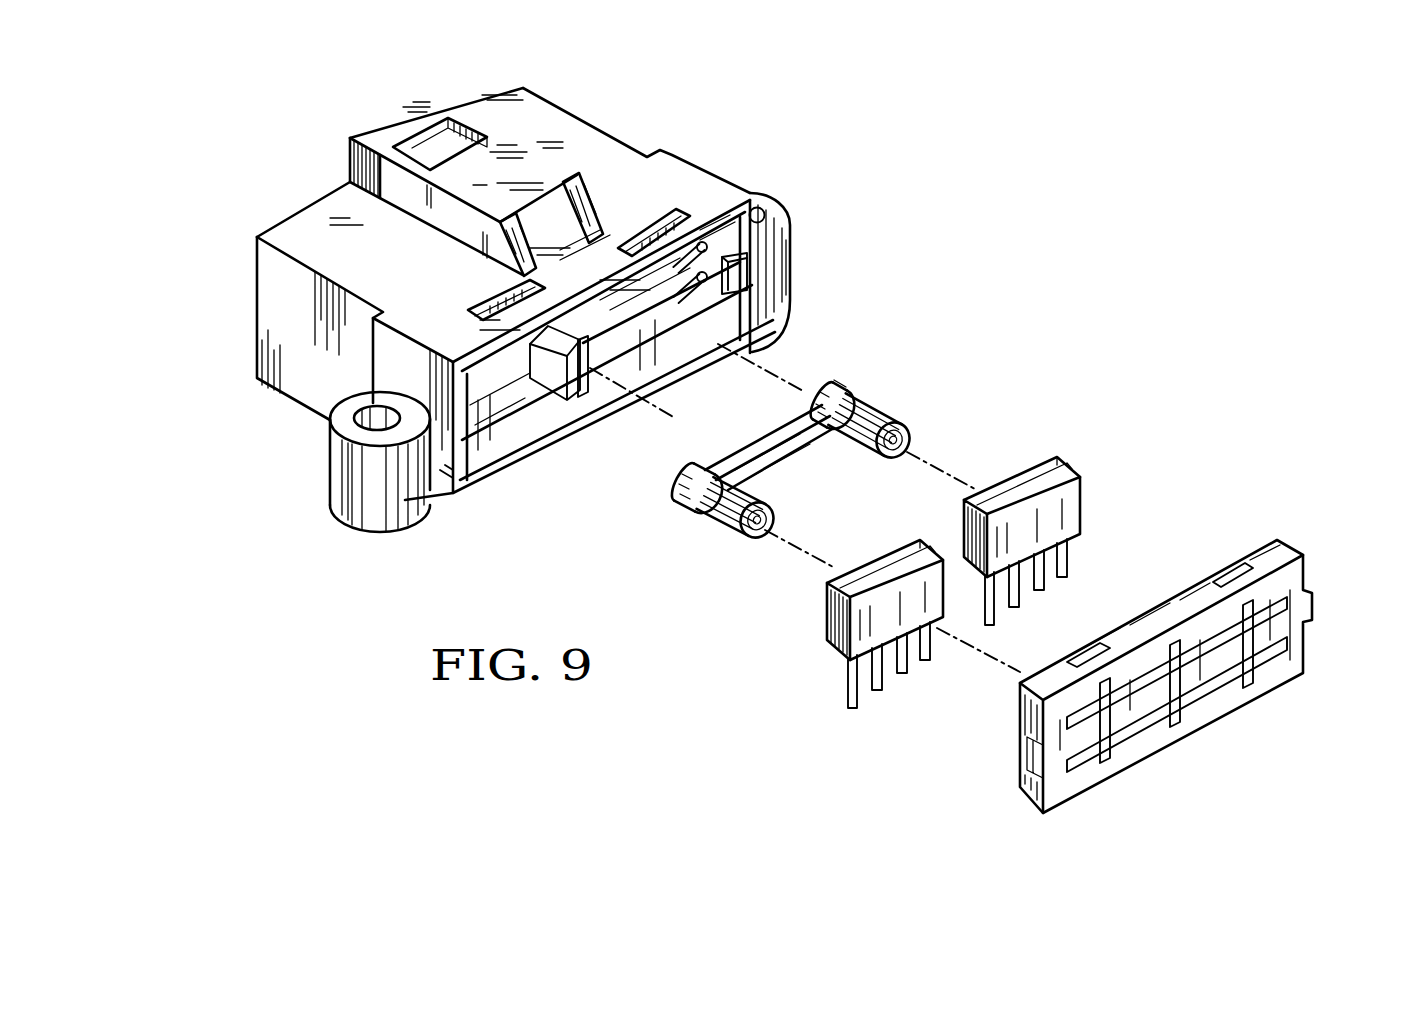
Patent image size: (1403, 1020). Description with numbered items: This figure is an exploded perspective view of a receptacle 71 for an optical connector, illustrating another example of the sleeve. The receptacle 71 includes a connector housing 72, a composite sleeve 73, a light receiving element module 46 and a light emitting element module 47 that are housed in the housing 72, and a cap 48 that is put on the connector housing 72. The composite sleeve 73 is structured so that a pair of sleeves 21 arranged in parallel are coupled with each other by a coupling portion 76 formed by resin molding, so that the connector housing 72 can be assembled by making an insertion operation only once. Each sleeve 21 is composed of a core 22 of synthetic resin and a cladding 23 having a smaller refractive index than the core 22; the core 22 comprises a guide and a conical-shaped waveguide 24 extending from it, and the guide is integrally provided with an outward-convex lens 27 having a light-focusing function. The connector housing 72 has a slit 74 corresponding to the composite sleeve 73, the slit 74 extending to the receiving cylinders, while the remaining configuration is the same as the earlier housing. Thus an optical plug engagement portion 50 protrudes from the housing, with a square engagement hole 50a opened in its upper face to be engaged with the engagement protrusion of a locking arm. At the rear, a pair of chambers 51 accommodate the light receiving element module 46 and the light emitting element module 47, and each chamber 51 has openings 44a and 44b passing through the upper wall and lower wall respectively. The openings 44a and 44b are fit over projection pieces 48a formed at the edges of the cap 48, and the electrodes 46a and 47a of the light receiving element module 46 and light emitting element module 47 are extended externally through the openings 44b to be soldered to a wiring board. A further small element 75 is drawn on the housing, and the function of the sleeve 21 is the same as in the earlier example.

The sleeve 21 is at (841, 482).
The core 22 is at (906, 415).
The cladding 23 is at (860, 398).
The waveguide 24 is at (762, 537).
The lens 27 is at (910, 442).
The opening 44a is at (657, 217).
The opening 44b is at (640, 363).
The light receiving element module 46 is at (852, 662).
The electrodes of light receiving element module 46a is at (927, 662).
The light emitting element module 47 is at (1077, 535).
The electrodes of light emitting element module 47a is at (1157, 592).
The cap 48 is at (1199, 677).
The projection pieces 48a is at (1250, 583).
The optical plug engagement portion 50 is at (390, 130).
The engagement hole 50a is at (437, 123).
The chamber 51 is at (753, 210).
The receptacle 71 is at (725, 152).
The connector housing 72 is at (287, 393).
The composite sleeve 73 is at (840, 383).
The slit 74 is at (550, 404).
The lock projection 75 is at (733, 255).
The coupling portion 76 is at (765, 434).